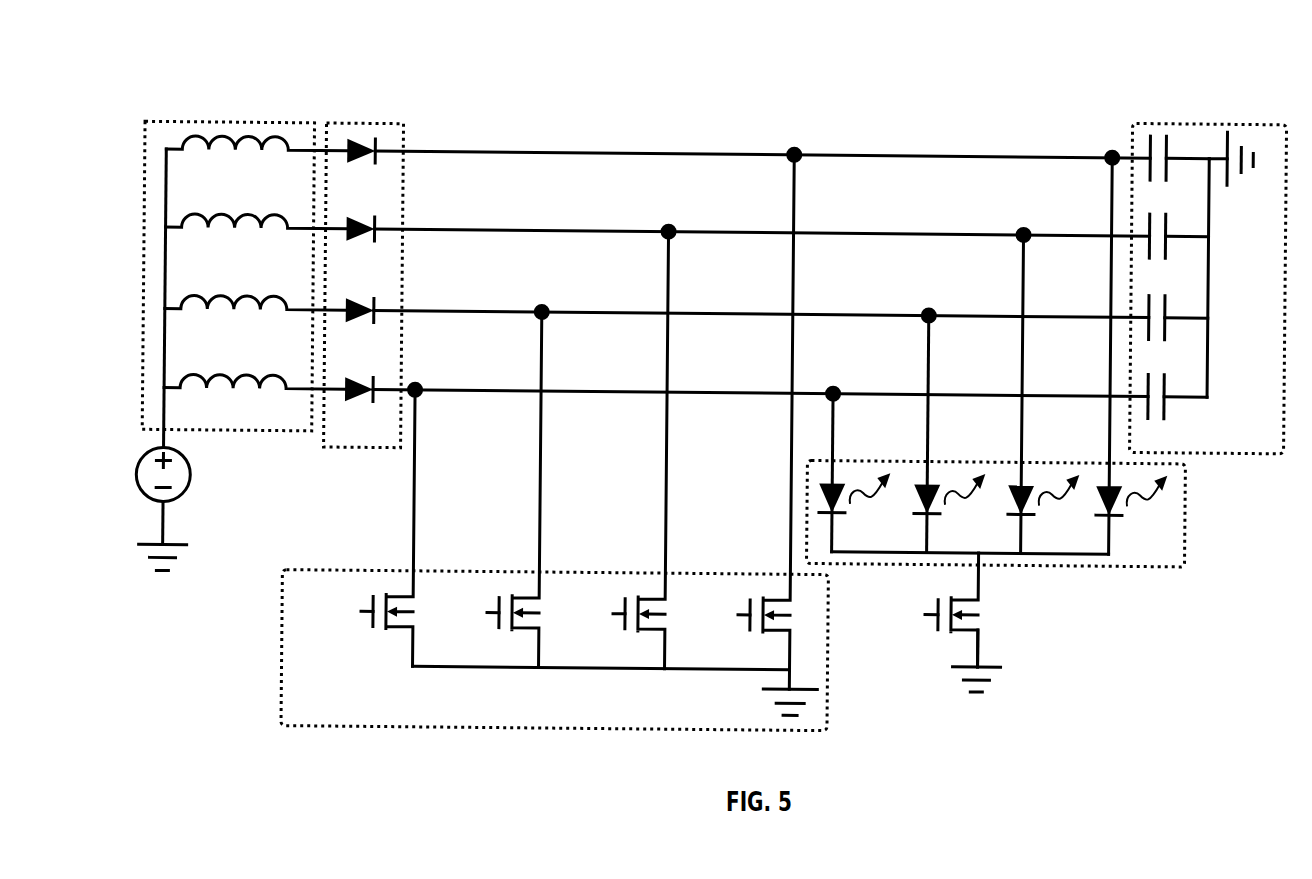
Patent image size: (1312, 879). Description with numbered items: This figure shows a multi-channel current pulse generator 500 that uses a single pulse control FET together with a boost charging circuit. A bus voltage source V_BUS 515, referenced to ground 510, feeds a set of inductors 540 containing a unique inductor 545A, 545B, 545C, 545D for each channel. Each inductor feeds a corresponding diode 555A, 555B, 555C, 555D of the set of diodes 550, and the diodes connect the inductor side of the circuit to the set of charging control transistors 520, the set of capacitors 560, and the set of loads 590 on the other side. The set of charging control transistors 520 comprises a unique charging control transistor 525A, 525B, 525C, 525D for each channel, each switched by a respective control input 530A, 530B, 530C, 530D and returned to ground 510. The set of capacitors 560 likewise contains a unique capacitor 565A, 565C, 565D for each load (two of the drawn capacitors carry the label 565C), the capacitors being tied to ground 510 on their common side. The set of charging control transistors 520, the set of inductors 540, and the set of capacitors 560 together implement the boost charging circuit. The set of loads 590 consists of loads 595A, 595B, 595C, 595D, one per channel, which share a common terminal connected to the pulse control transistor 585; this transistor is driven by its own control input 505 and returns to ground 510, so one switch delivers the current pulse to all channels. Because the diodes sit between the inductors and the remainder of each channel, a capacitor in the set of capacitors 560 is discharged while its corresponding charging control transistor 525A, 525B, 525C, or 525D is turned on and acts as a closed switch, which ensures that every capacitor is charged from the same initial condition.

The multi-channel current pulse generator 500 is at (900, 74).
The control signal for switch 585 505 is at (908, 616).
The ground 510 is at (707, 427).
The bus voltage source 515 is at (189, 492).
The set of charging control transistors 520 is at (370, 573).
The charging control transistor 525A is at (380, 528).
The charging control transistor 525B is at (499, 489).
The charging control transistor 525C is at (627, 450).
The charging control transistor 525D is at (752, 412).
The charging control transistor control input 530A is at (336, 605).
The charging control transistor control input 530B is at (462, 606).
The charging control transistor control input 530C is at (587, 607).
The charging control transistor control input 530D is at (711, 608).
The set of inductors 540 is at (205, 127).
The inductor 545A is at (254, 398).
The inductor 545B is at (255, 319).
The inductor 545C is at (255, 237).
The inductor 545D is at (256, 159).
The set of diodes 550 is at (338, 127).
The diode 555A is at (363, 412).
The diode 555B is at (363, 332).
The diode 555C is at (364, 251).
The diode 555D is at (365, 173).
The set of capacitors 560 is at (1231, 452).
The capacitor 565A is at (1172, 411).
The capacitor 565C is at (1172, 291).
The capacitor 565D is at (1174, 172).
The pulse control transistor 585 is at (984, 610).
The set of loads 590 is at (1125, 562).
The load 595A is at (859, 473).
The load 595B is at (954, 434).
The load 595C is at (1049, 394).
The load 595D is at (1138, 356).